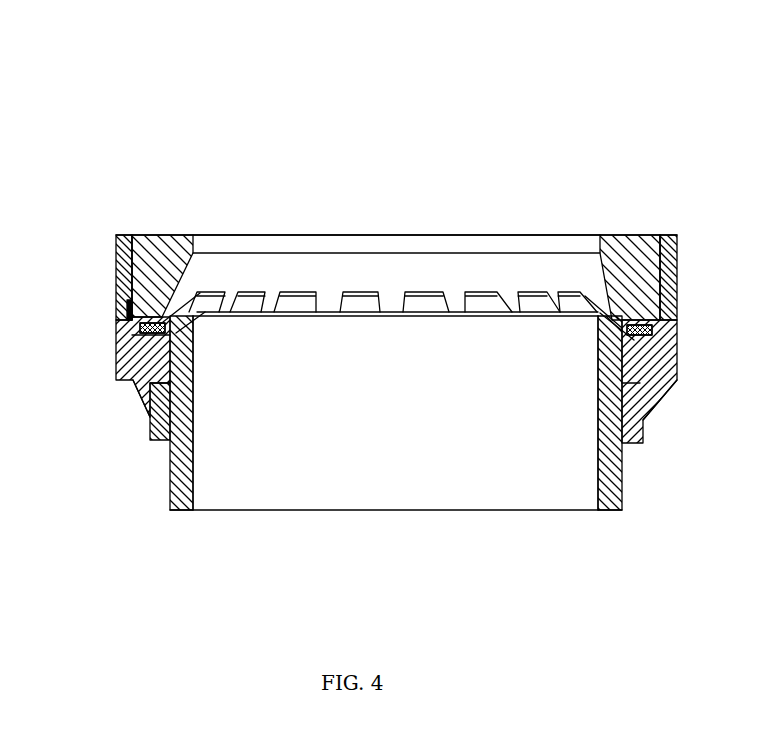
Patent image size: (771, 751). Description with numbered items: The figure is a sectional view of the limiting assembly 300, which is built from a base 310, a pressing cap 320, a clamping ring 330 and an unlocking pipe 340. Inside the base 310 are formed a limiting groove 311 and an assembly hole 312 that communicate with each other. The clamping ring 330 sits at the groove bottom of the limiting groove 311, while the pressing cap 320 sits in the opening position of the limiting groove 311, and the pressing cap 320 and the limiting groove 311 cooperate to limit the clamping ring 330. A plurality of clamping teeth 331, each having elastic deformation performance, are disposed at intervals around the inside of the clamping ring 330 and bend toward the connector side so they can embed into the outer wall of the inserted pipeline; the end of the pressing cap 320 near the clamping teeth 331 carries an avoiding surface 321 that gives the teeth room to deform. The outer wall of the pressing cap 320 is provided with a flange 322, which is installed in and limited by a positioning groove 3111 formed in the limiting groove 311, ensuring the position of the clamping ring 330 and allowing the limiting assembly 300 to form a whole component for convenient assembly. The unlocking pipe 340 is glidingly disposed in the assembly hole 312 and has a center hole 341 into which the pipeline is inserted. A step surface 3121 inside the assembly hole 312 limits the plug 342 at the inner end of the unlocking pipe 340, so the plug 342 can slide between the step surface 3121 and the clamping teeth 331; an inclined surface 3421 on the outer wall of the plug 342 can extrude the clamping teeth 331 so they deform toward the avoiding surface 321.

The limiting assembly 300 is at (180, 78).
The base 310 is at (115, 383).
The limiting groove 311 is at (116, 259).
The positioning groove 3111 is at (125, 300).
The assembly hole 312 is at (152, 447).
The step surface 3121 is at (152, 403).
The pressing cap 320 is at (163, 247).
The avoiding surface 321 is at (248, 257).
The flange 322 is at (122, 280).
The clamping ring 330 is at (126, 323).
The clamping teeth 331 is at (360, 292).
The unlocking pipe 340 is at (168, 477).
The center hole 341 is at (240, 488).
The plug 342 is at (142, 358).
The inclined surface 3421 is at (136, 332).